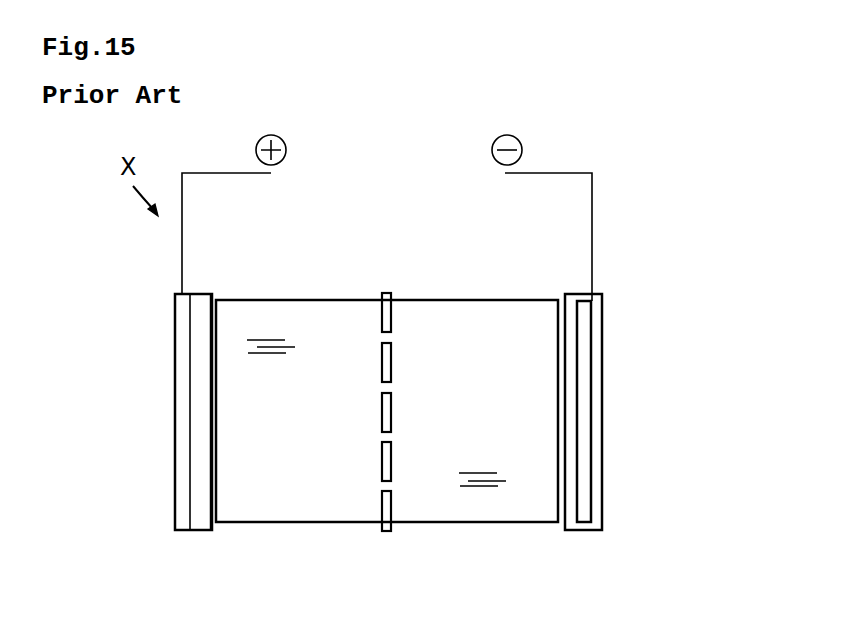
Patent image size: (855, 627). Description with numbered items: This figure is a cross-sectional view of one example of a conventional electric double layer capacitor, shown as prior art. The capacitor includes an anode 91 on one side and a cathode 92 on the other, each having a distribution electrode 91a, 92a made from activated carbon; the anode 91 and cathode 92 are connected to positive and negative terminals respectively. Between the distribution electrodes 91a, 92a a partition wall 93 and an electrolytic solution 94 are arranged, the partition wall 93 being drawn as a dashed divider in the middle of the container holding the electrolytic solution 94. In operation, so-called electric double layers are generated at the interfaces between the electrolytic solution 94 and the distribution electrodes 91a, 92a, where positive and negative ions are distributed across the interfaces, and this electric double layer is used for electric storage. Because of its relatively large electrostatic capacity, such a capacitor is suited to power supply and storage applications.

The anode 91 is at (169, 435).
The distribution electrode 91a is at (204, 523).
The cathode 92 is at (610, 437).
The distribution electrode 92a is at (570, 524).
The partition wall 93 is at (386, 290).
The electrolytic solution 94 is at (325, 315).